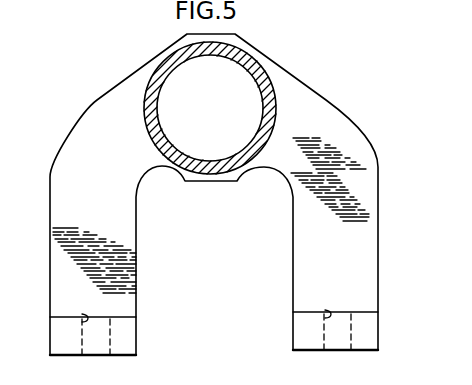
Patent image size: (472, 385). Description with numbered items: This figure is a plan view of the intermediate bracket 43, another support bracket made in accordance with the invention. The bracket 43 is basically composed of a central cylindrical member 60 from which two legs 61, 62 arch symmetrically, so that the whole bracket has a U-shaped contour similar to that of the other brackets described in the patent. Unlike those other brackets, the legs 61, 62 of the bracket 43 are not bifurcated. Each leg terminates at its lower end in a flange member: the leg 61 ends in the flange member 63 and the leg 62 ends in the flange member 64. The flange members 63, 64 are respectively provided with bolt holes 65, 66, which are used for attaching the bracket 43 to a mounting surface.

The intermediate bracket 43 is at (92, 104).
The central cylindrical member 60 is at (262, 87).
The leg 61 is at (314, 120).
The leg 62 is at (72, 190).
The flange member 63 is at (304, 333).
The flange member 64 is at (130, 341).
The bolt hole 65 is at (331, 312).
The bolt hole 66 is at (84, 316).